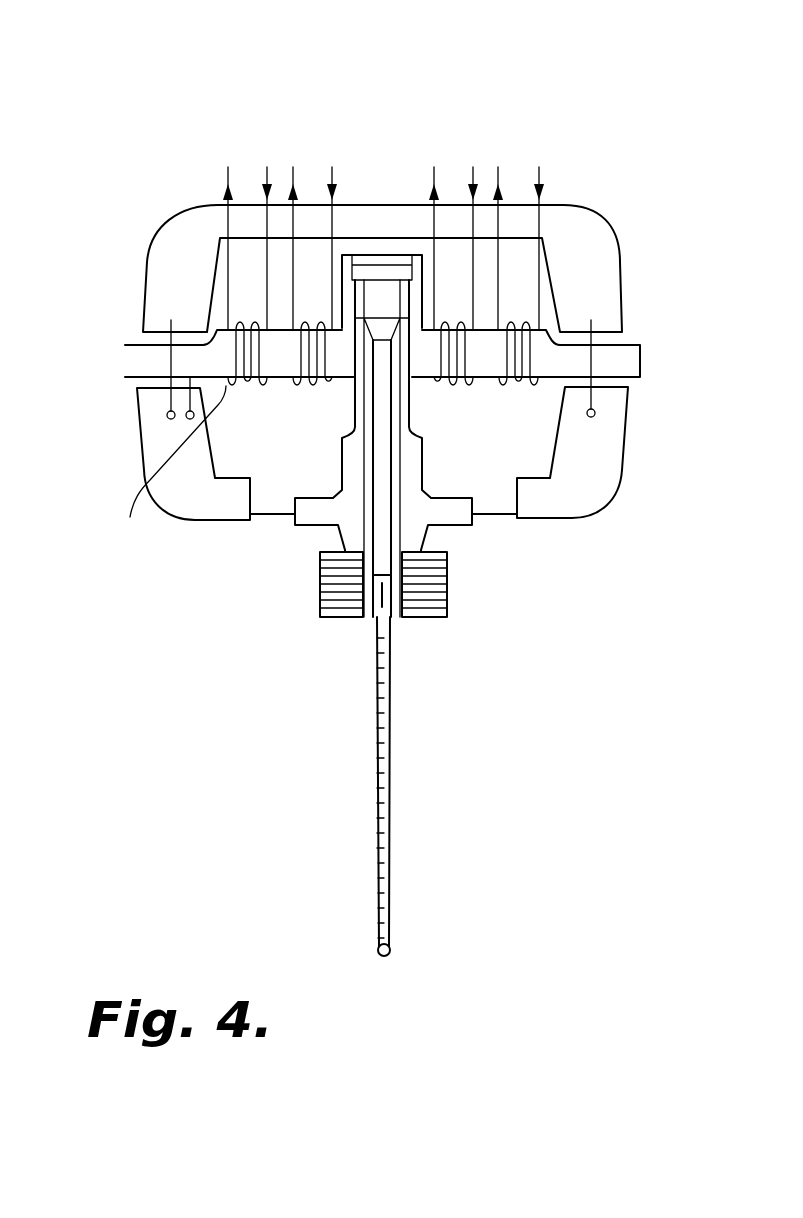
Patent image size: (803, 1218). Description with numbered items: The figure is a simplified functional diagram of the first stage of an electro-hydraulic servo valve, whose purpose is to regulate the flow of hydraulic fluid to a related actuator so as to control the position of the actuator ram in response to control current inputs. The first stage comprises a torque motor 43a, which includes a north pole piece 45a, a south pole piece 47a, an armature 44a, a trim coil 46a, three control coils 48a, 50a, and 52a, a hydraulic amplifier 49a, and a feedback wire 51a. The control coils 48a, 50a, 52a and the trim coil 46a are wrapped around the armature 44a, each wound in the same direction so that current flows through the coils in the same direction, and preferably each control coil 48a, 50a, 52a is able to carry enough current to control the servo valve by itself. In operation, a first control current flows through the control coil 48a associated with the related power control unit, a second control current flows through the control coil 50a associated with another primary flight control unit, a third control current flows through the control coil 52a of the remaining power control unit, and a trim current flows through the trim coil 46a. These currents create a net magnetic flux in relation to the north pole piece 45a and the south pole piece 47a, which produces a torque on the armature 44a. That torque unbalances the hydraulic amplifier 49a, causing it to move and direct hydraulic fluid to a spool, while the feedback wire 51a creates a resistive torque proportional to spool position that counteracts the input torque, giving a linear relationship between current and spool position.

The torque motor 43a is at (396, 104).
The armature 44a is at (640, 357).
The north pole piece 45a is at (597, 212).
The trim coil 46a is at (522, 392).
The south pole piece 47a is at (615, 492).
The control coil 48a is at (243, 393).
The hydraulic amplifier 49a is at (472, 545).
The control coil 50a is at (315, 393).
The feedback wire 51a is at (377, 728).
The control coil 52a is at (455, 392).